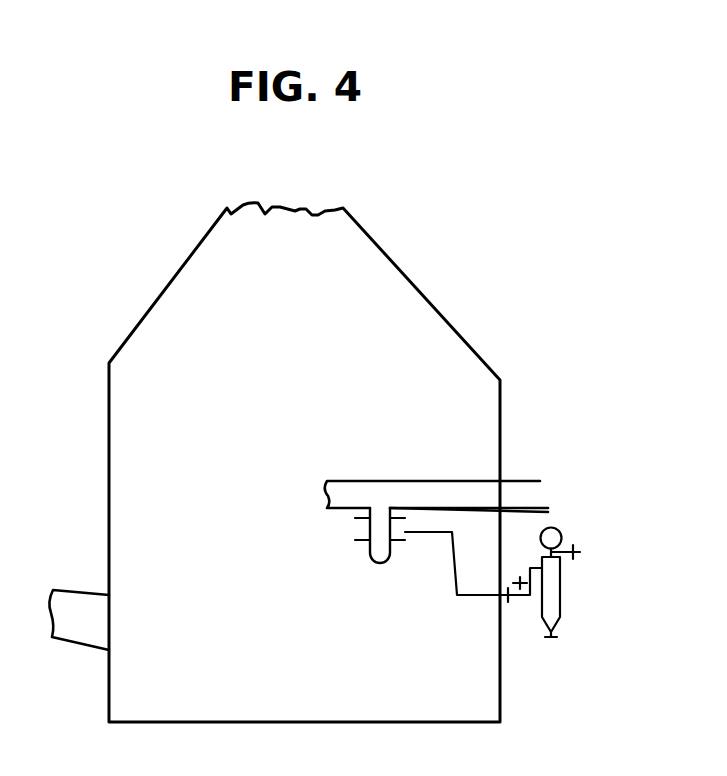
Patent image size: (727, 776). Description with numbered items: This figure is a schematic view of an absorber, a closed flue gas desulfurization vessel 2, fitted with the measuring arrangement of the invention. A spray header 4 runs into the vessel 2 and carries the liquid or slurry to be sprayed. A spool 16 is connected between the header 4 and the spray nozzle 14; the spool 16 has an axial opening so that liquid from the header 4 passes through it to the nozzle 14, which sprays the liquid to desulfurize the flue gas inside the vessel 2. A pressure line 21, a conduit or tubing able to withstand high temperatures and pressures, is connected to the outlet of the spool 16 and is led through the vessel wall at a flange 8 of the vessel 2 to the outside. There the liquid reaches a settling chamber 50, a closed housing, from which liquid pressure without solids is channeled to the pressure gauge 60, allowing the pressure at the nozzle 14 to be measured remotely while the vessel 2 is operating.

The absorber vessel 2 is at (503, 403).
The spray header 4 is at (407, 481).
The flange 8 is at (508, 603).
The spray nozzle 14 is at (367, 553).
The spool 16 is at (367, 525).
The pressure line 21 is at (465, 597).
The settling chamber 50 is at (563, 583).
The pressure gauge 60 is at (562, 532).